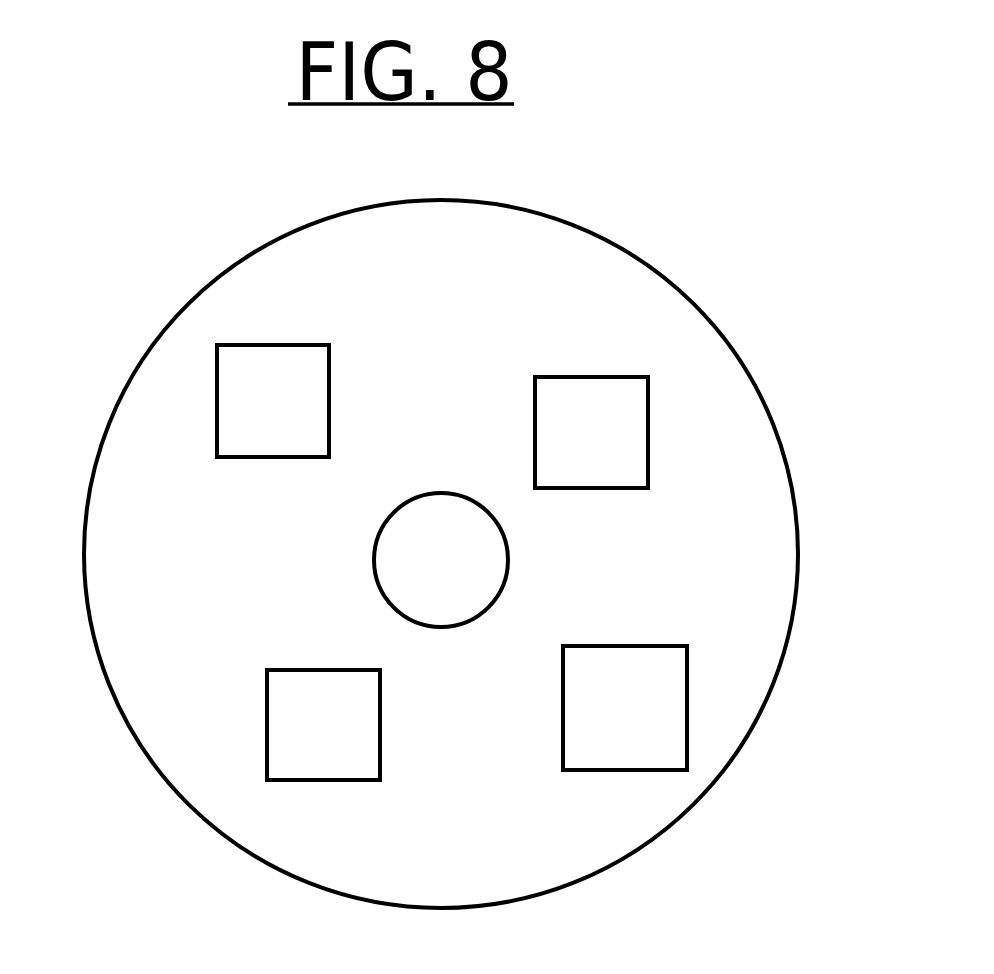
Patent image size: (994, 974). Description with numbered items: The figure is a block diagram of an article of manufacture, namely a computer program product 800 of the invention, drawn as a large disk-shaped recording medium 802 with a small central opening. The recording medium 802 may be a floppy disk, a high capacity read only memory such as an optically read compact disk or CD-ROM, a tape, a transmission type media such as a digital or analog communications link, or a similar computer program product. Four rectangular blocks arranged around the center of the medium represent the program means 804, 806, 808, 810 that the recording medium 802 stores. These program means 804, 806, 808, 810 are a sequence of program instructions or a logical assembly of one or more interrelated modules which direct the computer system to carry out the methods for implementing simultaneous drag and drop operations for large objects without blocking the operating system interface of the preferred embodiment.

The computer program product 800 is at (749, 324).
The recording medium 802 is at (146, 350).
The program means 804 is at (323, 725).
The program means 806 is at (625, 708).
The program means 808 is at (591, 432).
The program means 810 is at (273, 401).